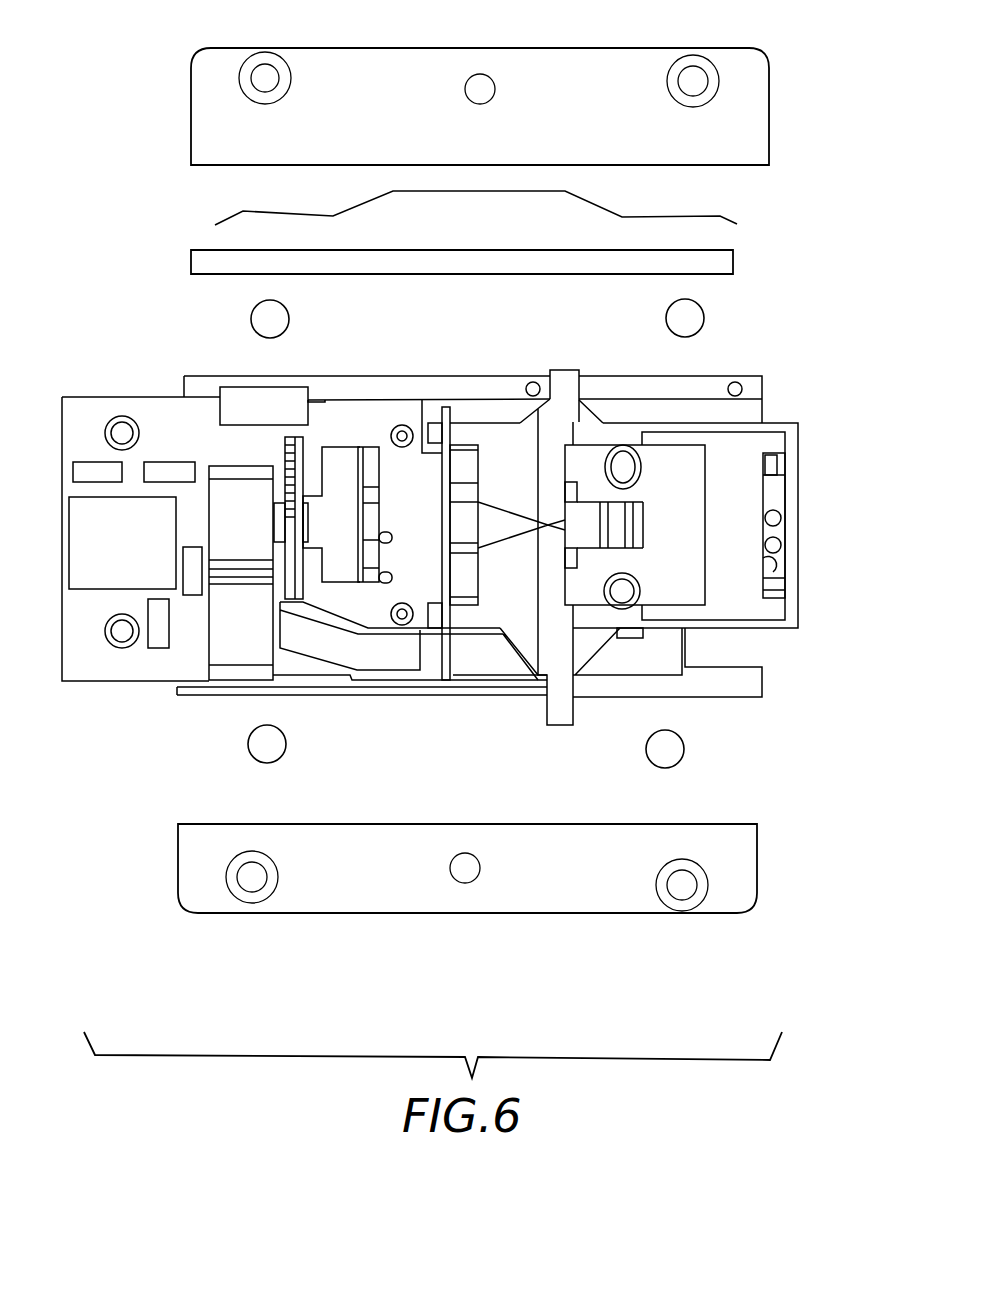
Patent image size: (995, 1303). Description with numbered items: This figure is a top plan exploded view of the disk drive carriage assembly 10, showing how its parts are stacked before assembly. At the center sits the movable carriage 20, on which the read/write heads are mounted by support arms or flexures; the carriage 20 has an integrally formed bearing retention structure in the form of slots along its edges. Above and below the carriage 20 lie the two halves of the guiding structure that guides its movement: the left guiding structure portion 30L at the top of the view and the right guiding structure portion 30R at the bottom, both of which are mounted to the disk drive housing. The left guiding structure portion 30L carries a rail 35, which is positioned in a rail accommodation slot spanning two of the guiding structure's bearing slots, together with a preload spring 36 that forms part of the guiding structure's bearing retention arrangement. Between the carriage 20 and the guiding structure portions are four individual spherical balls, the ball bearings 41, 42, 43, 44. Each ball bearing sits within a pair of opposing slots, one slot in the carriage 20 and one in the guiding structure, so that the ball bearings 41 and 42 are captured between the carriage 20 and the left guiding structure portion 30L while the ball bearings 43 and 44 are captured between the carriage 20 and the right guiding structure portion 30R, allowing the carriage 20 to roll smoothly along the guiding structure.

The carriage assembly 10 is at (122, 157).
The movable carriage 20 is at (762, 396).
The left guiding structure portion 30L is at (769, 92).
The right guiding structure portion 30R is at (757, 848).
The rail 35 is at (734, 255).
The preload spring 36 is at (722, 217).
The ball bearing 41 is at (286, 311).
The ball bearing 42 is at (701, 310).
The ball bearing 43 is at (285, 742).
The ball bearing 44 is at (682, 750).